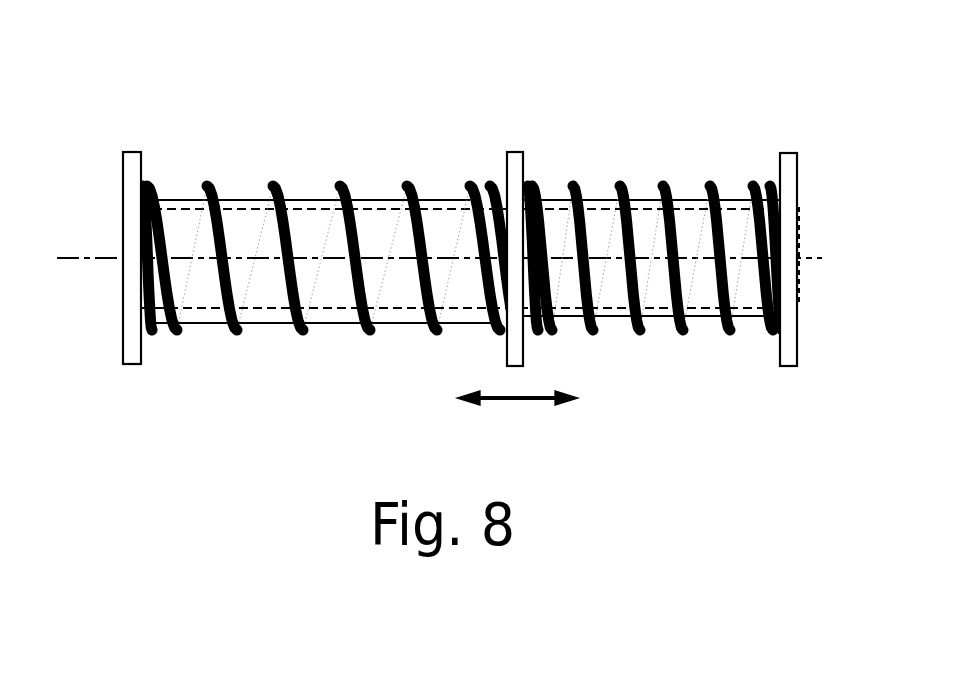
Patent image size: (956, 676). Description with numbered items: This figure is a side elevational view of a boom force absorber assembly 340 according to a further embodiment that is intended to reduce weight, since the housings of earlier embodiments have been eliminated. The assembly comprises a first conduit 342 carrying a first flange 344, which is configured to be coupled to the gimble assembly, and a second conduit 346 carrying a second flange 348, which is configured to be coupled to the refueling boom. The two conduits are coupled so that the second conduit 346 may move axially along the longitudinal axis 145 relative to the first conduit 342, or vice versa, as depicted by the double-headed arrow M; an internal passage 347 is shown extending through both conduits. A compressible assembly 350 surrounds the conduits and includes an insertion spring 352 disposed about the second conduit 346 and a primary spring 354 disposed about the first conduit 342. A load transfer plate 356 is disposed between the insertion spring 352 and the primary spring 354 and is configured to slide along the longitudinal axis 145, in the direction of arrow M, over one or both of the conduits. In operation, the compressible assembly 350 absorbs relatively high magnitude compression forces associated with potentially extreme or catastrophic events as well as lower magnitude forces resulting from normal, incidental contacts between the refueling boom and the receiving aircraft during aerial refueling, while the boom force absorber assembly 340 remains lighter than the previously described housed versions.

The boom force absorber assembly 340 is at (232, 78).
The first flange 344 is at (119, 128).
The load transfer plate 356 is at (513, 150).
The second flange 348 is at (810, 128).
The first conduit 342 is at (302, 198).
The inner rod/core 347 is at (373, 208).
The second conduit 346 is at (597, 197).
The primary spring 354 is at (238, 332).
The insertion spring 352 is at (640, 330).
The compressible assembly 350 is at (342, 409).
The longitudinal axis 145 is at (100, 258).
The double-headed arrow M is at (517, 400).